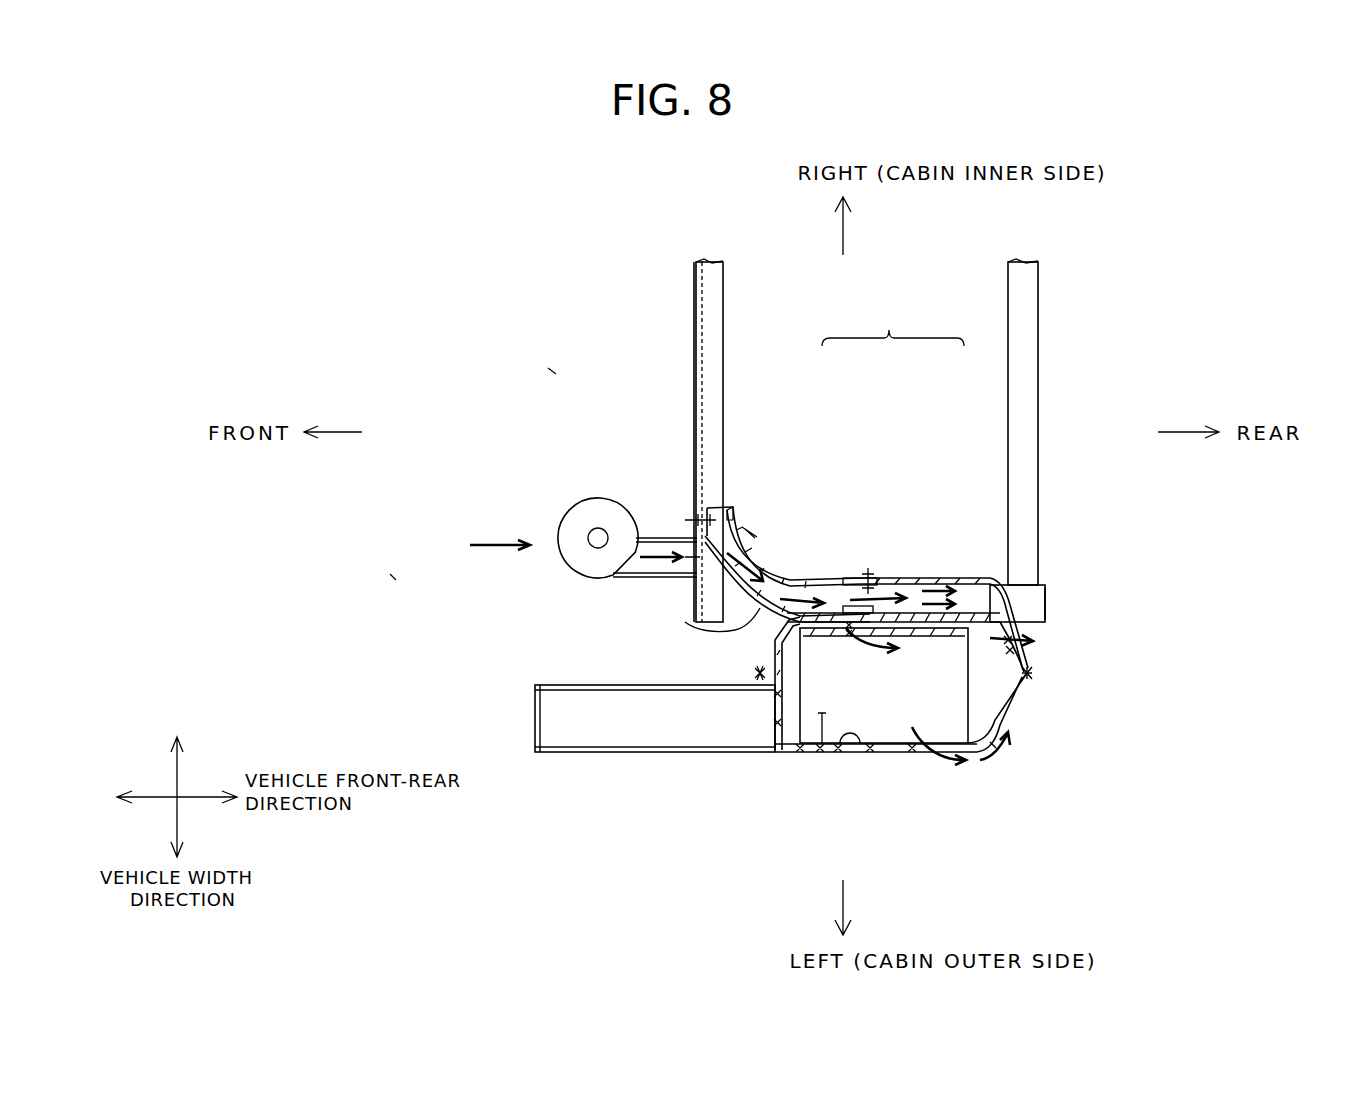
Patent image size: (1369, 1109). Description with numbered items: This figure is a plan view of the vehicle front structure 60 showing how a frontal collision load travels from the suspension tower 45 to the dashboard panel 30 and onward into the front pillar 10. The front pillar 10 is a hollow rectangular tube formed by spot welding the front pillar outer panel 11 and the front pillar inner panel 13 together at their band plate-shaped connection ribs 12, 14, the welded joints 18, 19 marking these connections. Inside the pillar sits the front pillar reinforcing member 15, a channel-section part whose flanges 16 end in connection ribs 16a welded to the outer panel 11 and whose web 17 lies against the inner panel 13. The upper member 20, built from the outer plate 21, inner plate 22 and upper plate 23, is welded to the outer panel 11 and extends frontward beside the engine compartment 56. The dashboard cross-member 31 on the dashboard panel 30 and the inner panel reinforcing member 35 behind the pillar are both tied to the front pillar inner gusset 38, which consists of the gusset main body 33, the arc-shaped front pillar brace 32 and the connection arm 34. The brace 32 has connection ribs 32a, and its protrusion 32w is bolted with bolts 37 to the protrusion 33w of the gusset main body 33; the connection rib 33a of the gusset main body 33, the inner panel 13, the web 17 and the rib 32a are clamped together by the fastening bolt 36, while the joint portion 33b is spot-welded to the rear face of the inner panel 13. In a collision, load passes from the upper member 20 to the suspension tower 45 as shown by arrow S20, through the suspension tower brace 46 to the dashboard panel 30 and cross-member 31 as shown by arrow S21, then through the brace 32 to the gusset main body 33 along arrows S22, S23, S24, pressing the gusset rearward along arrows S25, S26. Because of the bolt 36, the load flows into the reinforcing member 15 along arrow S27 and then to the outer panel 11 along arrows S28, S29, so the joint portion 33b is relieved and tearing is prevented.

The front pillar 10 is at (1011, 771).
The front pillar outer panel 11 is at (900, 752).
The connection rib 12 is at (1025, 680).
The front pillar inner panel 13 is at (1040, 658).
The connection rib 14 is at (1030, 674).
The front pillar reinforcing member 15 is at (892, 733).
The flange 16 is at (812, 752).
The connection rib 16a is at (858, 752).
The web 17 is at (928, 634).
The welded joint 18 is at (758, 673).
The welded joint 19 is at (1032, 676).
The upper member 20 is at (565, 755).
The outer plate 21 is at (682, 755).
The inner plate 22 is at (560, 685).
The upper plate 23 is at (535, 716).
The dashboard panel 30 is at (695, 318).
The dashboard cross-member 31 is at (700, 262).
The front pillar brace 32 is at (755, 500).
The connection rib 32a is at (712, 628).
The protrusion 32w is at (738, 507).
The gusset main body 33 is at (889, 576).
The connection rib 33a is at (948, 578).
The joint portion 33b is at (1047, 597).
The protrusion 33w is at (982, 582).
The connection arm 34 is at (1047, 598).
The inner panel reinforcing member 35 is at (1040, 378).
The fastening bolt 36 is at (830, 588).
The bolt 37 is at (868, 568).
The front pillar inner gusset 38 is at (893, 328).
The suspension tower 45 is at (568, 558).
The suspension tower brace 46 is at (648, 538).
The engine compartment 56 is at (545, 374).
The vehicle front structure 60 is at (384, 583).
The arrow S20 is at (496, 532).
The arrow S21 is at (667, 538).
The arrow S22 is at (782, 548).
The arrow S23 is at (788, 590).
The arrow S24 is at (845, 590).
The arrow S25 is at (920, 588).
The arrow S26 is at (1045, 634).
The arrow S27 is at (848, 645).
The arrow S28 is at (944, 755).
The arrow S29 is at (1027, 762).